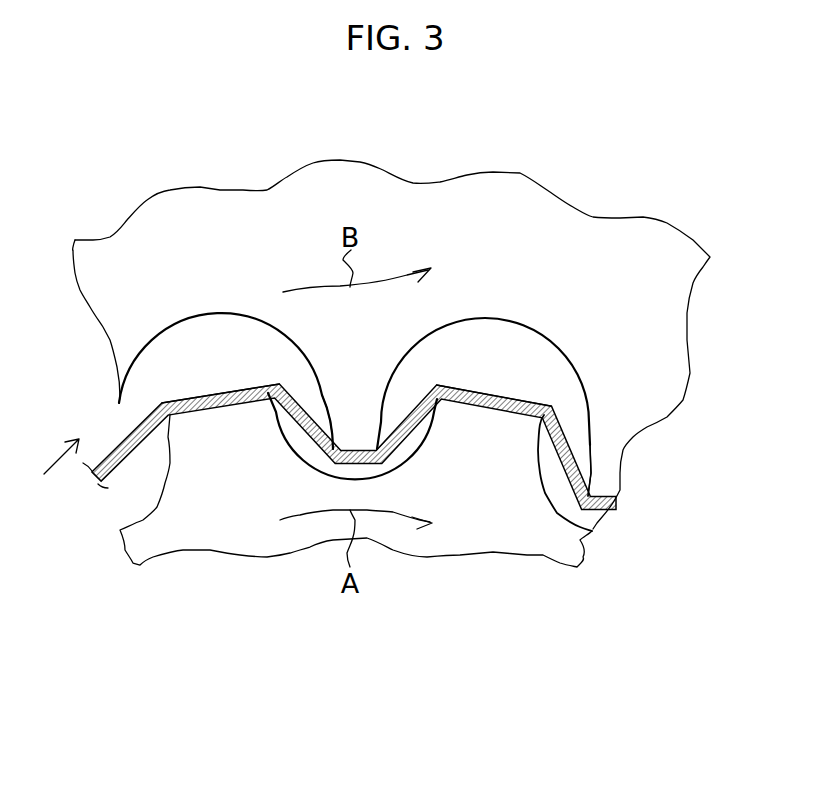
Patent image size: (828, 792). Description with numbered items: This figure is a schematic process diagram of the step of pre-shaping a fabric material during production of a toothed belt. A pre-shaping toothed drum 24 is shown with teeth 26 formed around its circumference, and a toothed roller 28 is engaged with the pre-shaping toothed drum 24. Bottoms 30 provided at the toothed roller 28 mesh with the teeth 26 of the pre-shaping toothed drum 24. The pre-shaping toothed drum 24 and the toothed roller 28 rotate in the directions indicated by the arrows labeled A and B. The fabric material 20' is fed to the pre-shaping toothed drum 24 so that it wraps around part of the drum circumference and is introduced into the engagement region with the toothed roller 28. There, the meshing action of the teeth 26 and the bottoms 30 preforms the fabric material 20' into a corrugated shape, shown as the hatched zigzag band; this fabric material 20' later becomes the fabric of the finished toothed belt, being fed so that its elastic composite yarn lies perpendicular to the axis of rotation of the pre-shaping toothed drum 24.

The toothed roller 28 is at (592, 213).
The pre-shaping toothed drum 24 is at (544, 556).
The fabric material 20' is at (401, 447).
The teeth 26 is at (197, 421).
The bottoms 30 is at (338, 393).